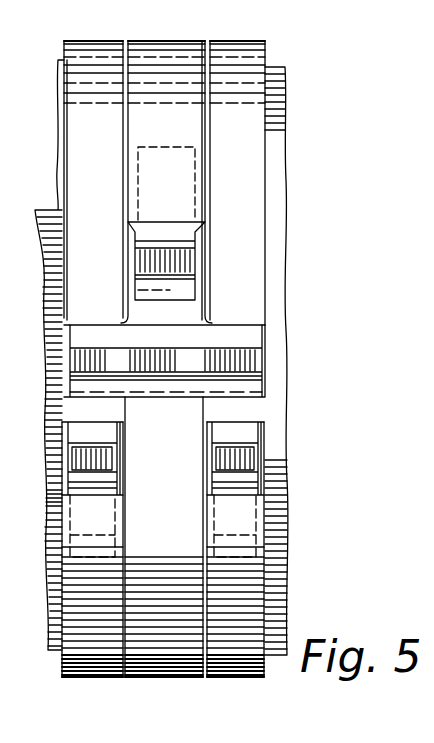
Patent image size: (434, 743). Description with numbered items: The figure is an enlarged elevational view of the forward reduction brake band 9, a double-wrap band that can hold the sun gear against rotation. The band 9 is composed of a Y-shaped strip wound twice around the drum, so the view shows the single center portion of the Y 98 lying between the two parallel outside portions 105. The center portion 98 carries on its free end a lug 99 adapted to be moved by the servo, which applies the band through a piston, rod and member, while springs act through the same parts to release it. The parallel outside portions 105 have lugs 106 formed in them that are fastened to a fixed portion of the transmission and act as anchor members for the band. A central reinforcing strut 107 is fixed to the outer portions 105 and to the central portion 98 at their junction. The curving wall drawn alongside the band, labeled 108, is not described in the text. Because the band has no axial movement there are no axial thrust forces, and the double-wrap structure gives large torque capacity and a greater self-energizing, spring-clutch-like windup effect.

The friction brake band 9 is at (67, 47).
The single center portion of the Y 98 is at (132, 50).
The lug 99 is at (196, 260).
The parallel outside portions of the Y band 105 is at (242, 678).
The lugs 106 is at (100, 482).
The central reinforcing strut 107 is at (205, 326).
The outer jacket 108 is at (276, 132).